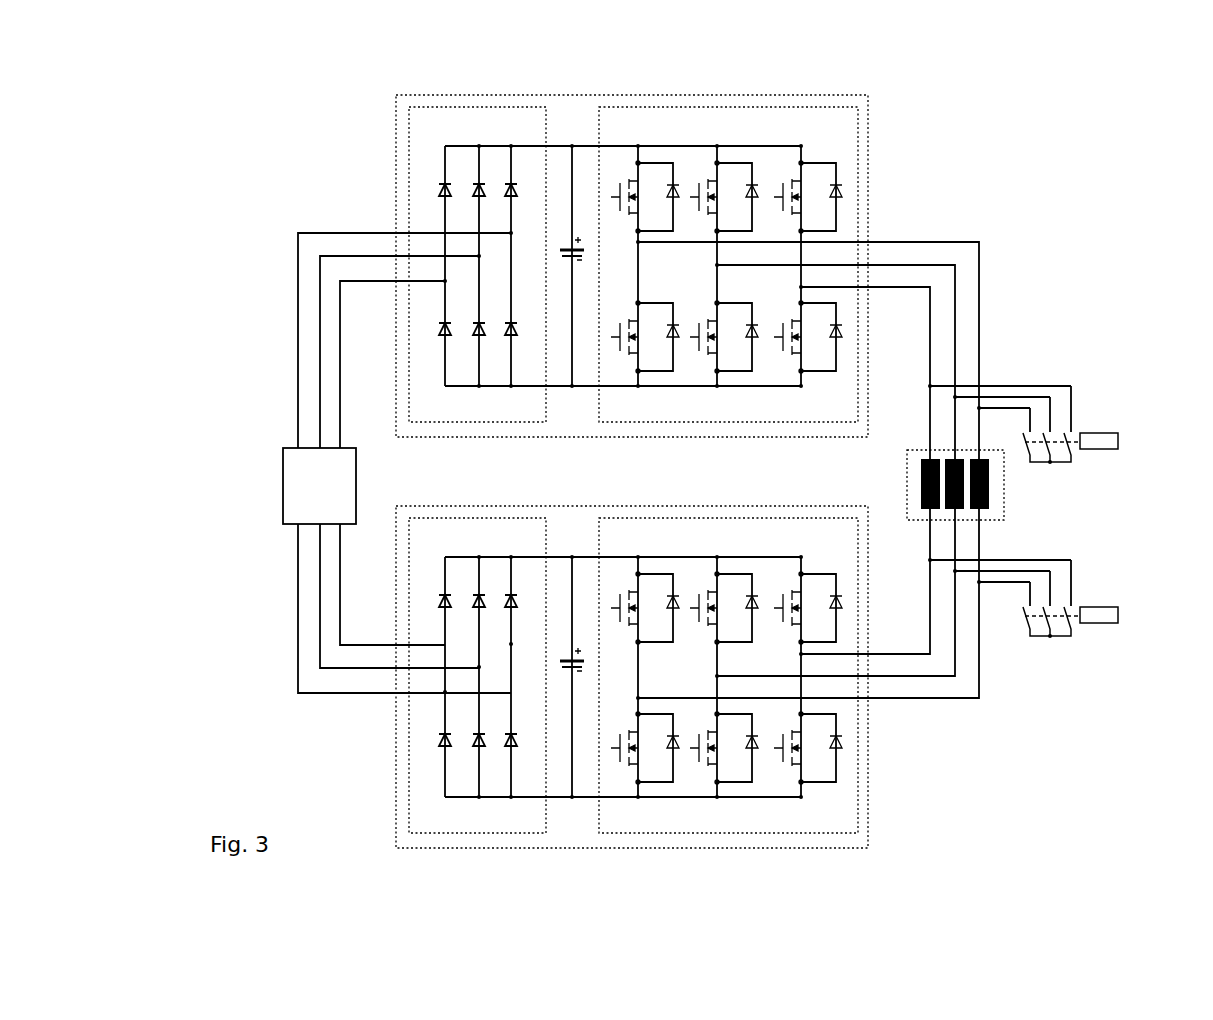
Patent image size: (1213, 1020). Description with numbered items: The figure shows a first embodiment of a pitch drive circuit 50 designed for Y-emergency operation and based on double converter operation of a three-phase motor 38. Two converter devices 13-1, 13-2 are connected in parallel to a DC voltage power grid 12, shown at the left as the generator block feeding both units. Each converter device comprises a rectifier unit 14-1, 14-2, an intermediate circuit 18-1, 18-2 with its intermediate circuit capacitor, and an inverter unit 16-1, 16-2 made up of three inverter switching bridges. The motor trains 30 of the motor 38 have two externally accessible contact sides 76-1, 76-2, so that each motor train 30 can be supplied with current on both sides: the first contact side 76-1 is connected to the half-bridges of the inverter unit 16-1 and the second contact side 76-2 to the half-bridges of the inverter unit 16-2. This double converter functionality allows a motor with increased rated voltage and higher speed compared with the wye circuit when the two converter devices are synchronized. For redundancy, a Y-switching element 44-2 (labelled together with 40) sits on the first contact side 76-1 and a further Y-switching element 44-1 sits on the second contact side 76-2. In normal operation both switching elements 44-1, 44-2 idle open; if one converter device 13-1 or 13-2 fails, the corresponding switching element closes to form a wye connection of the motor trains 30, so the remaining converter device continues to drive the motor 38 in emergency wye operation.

The DC voltage power grid 12 is at (283, 490).
The first converter device 13-1 is at (578, 95).
The second converter device 13-2 is at (578, 507).
The rectifier unit 14-1 is at (477, 107).
The rectifier unit 14-2 is at (480, 518).
The inverter unit 16-1 is at (731, 107).
The inverter unit 16-2 is at (735, 518).
The intermediate circuit 18-1 is at (595, 412).
The intermediate circuit 18-2 is at (595, 827).
The motor train 30 is at (921, 485).
The three-phase motor 38 is at (1005, 503).
The switching device 40 is at (1065, 519).
The Y-switching element 44-1 is at (1108, 624).
The Y-switching element 44-2 is at (1108, 450).
The pitch drive circuit 50 is at (979, 169).
The first contact side 76-1 is at (930, 450).
The second contact side 76-2 is at (930, 518).